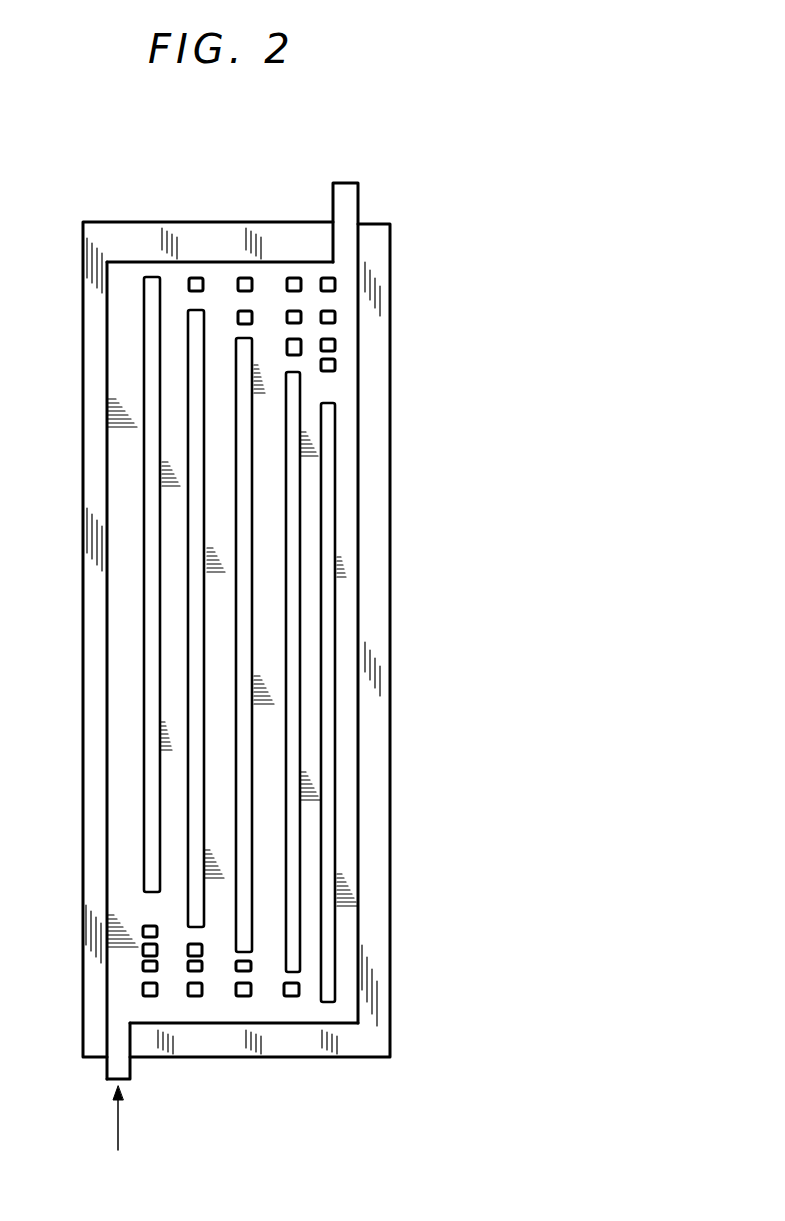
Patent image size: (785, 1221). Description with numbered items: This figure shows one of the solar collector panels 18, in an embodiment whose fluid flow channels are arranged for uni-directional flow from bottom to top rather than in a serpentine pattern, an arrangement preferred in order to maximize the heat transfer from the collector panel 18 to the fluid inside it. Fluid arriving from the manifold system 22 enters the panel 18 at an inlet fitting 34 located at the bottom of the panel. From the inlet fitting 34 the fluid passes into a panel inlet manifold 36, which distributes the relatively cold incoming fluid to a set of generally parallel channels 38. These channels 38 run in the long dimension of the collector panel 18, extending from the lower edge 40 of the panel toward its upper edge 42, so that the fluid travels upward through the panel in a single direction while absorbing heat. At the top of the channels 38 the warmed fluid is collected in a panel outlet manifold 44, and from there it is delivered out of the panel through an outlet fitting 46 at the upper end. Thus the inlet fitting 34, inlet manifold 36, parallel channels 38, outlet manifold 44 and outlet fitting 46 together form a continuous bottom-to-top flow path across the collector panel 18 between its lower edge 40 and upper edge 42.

The collector panel 18 is at (404, 712).
The manifold system 22 is at (121, 1148).
The inlet fitting 34 is at (103, 1071).
The panel inlet manifold 36 is at (178, 988).
The channels 38 is at (117, 858).
The lower edge 40 is at (283, 1059).
The upper edge 42 is at (175, 258).
The panel outlet manifold 44 is at (268, 292).
The outlet fitting 46 is at (360, 192).